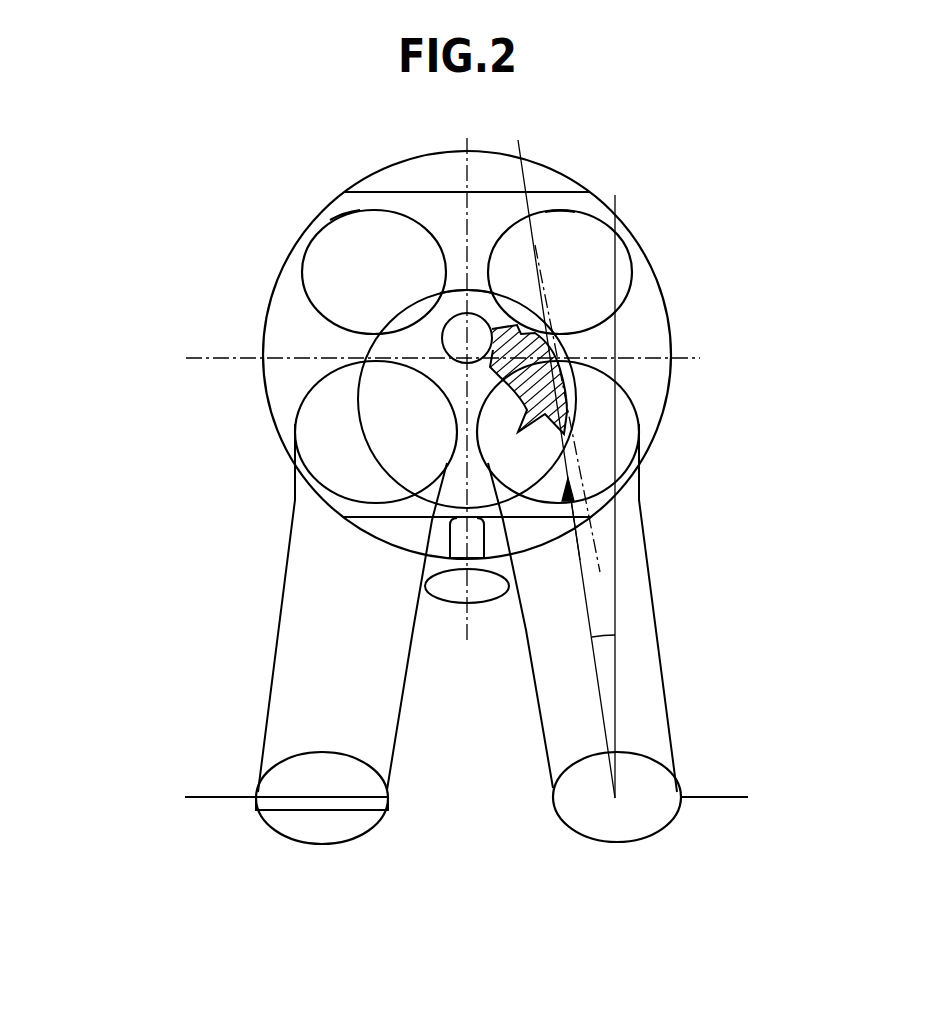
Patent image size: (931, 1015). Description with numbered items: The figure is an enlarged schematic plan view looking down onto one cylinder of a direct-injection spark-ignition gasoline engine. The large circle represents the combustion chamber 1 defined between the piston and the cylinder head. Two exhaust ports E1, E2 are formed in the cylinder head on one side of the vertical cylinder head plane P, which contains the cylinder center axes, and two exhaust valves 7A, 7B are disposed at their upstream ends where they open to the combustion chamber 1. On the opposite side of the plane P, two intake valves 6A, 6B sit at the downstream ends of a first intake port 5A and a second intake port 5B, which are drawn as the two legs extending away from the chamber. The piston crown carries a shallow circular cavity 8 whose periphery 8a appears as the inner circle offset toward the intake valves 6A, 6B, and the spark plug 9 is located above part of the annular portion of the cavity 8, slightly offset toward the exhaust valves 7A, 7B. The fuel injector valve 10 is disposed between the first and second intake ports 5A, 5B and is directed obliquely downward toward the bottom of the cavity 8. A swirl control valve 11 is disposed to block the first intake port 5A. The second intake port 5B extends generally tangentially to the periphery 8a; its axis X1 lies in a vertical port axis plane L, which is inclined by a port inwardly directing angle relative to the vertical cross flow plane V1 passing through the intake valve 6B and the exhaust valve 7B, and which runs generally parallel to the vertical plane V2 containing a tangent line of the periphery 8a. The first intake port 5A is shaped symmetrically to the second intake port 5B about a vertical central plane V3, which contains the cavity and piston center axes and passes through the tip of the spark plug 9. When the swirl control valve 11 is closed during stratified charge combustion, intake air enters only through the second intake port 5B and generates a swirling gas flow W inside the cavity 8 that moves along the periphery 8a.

The combustion chamber 1 is at (647, 303).
The first intake port 5A is at (272, 710).
The second intake port 5B is at (660, 712).
The intake valve 6A is at (318, 433).
The intake valve 6B is at (632, 430).
The exhaust valve 7A is at (322, 258).
The exhaust valve 7B is at (582, 227).
The cavity 8 is at (377, 354).
The periphery 8a is at (450, 290).
The spark plug 9 is at (493, 329).
The fuel injector valve 10 is at (443, 593).
The swirl control valve 11 is at (357, 833).
The exhaust port E1 is at (347, 212).
The exhaust port E2 is at (558, 208).
The vertical port axis plane L is at (518, 142).
The vertical cylinder head plane P is at (190, 363).
The gas flow W is at (568, 397).
The vertical cross flow plane V1 is at (615, 548).
The vertical plane V2 is at (588, 482).
The vertical central plane V3 is at (469, 628).
The axis X1 is at (597, 680).